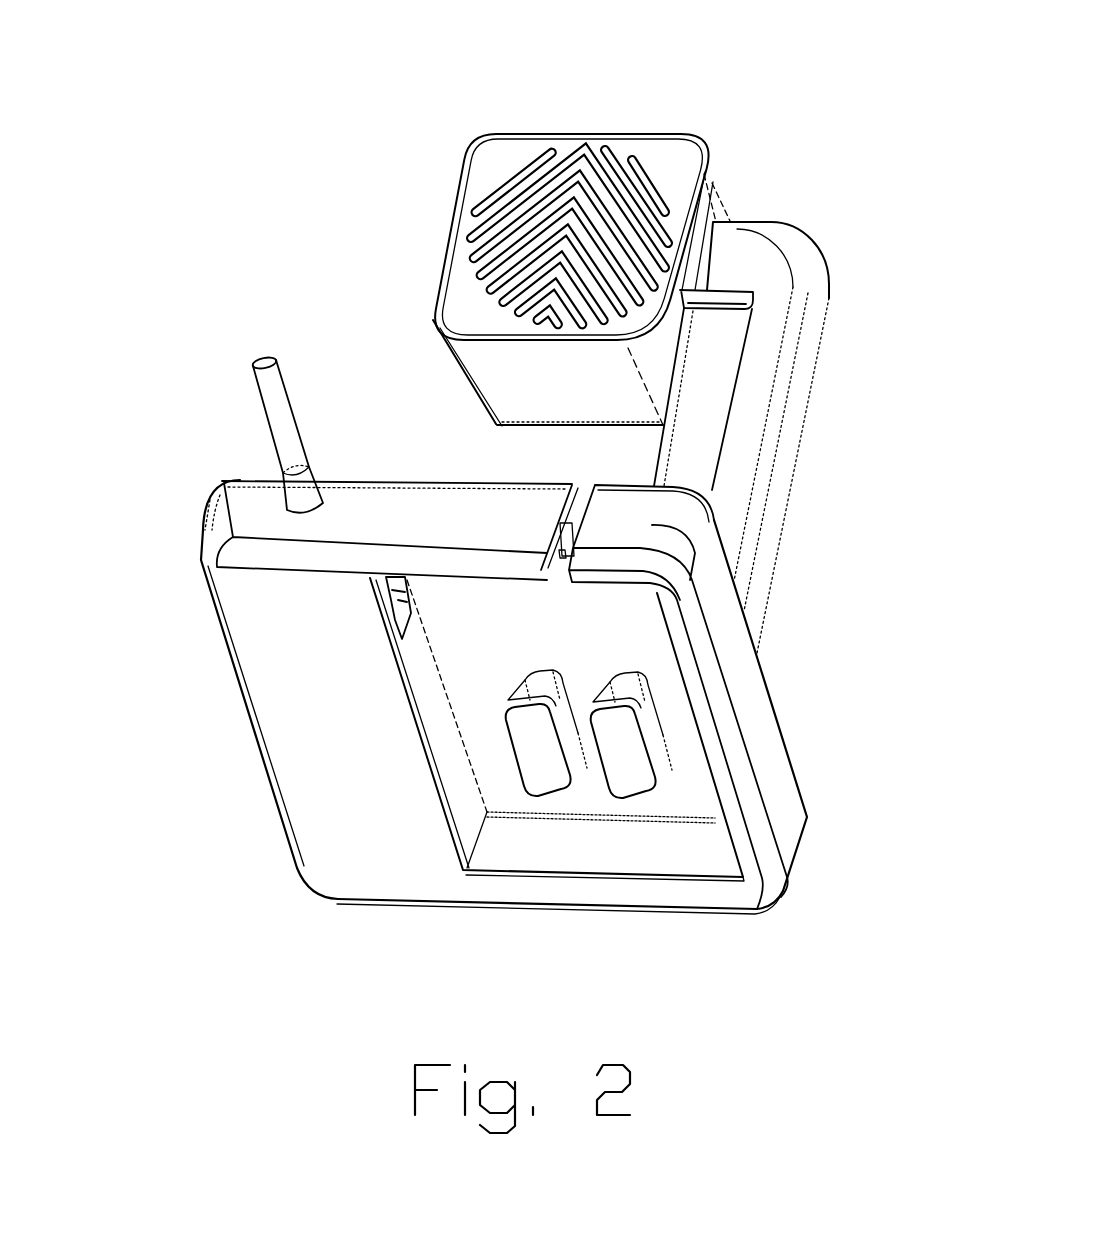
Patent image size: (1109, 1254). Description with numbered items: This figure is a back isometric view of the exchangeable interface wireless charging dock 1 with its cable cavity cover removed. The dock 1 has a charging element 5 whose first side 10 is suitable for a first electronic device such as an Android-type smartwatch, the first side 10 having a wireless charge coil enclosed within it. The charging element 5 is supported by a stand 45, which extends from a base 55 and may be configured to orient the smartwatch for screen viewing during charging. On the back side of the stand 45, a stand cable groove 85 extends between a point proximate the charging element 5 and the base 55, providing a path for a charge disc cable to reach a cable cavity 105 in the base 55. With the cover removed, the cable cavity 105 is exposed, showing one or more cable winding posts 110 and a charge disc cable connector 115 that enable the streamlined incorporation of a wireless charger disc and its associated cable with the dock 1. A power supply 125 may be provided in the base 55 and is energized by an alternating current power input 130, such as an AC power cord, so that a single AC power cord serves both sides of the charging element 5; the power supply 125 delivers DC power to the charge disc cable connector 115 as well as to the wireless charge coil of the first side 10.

The exchangeable interface wireless charging dock 1 is at (325, 267).
The charging element 5 is at (500, 157).
The first side 10 is at (662, 183).
The stand 45 is at (765, 258).
The stand cable groove 85 is at (745, 352).
The base 55 is at (312, 682).
The cable cavity 105 is at (680, 797).
The cable winding posts 110 is at (613, 723).
The charge disc cable connector 115 is at (390, 600).
The power supply 125 is at (352, 792).
The alternating current power input 130 is at (270, 405).